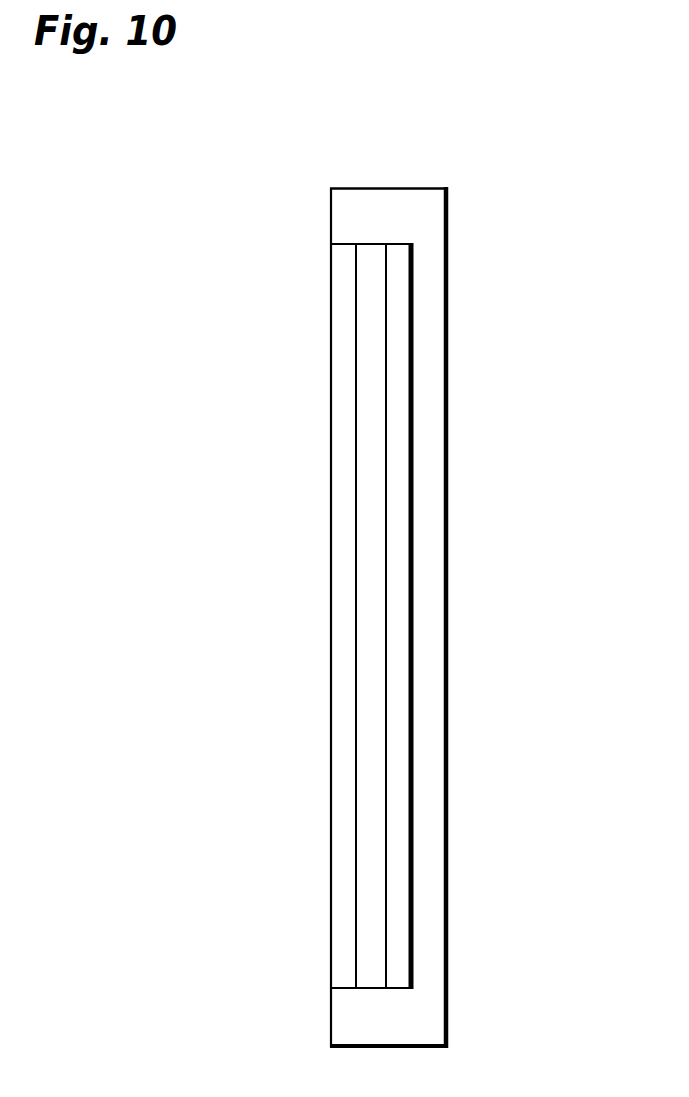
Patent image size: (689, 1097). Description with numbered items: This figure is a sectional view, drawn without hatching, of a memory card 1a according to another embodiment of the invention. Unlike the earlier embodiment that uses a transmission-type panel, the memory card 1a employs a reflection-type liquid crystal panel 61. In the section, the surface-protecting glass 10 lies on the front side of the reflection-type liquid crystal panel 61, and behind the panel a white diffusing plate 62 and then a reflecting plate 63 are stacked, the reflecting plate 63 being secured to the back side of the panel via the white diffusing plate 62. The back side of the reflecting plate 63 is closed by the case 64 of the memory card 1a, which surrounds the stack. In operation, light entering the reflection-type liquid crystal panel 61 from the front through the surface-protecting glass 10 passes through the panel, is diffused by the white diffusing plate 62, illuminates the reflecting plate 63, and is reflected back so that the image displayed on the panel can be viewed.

The memory card 1a is at (388, 574).
The surface-protecting glass 10 is at (338, 373).
The reflection-type liquid crystal panel 61 is at (370, 300).
The white diffusing plate 62 is at (398, 364).
The reflecting plate 63 is at (415, 531).
The case 64 is at (446, 201).